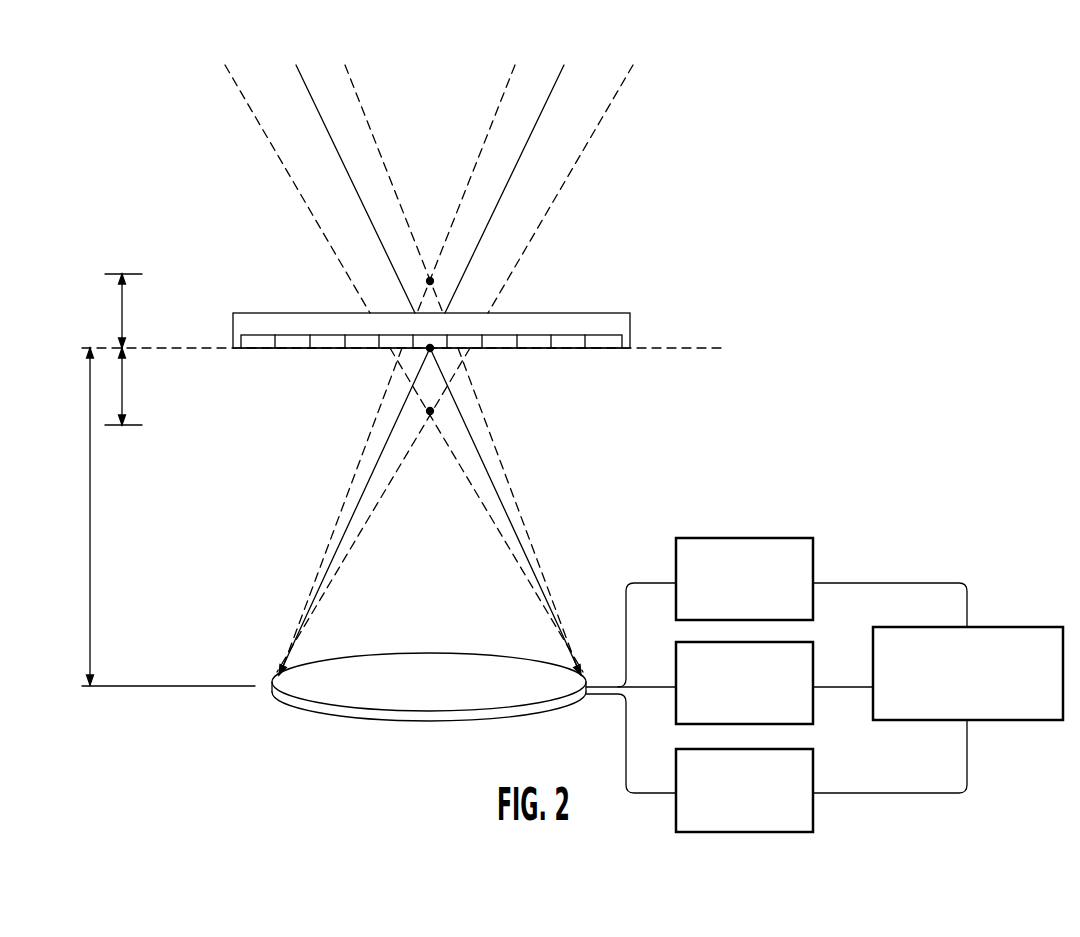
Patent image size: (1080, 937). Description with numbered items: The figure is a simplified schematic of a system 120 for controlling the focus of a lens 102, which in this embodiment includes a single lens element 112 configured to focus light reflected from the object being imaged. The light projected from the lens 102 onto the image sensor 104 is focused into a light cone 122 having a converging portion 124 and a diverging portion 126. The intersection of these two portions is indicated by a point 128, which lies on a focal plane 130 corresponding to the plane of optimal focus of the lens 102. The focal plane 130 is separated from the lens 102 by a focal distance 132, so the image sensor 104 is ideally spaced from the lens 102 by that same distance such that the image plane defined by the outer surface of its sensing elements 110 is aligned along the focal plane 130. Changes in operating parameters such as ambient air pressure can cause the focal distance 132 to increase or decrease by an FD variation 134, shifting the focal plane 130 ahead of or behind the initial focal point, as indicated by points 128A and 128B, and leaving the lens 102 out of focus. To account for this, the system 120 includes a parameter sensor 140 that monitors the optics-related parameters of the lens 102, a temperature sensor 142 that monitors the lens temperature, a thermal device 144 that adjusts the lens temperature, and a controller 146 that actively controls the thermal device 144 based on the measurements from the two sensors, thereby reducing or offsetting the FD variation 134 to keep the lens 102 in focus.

The lens 102 is at (294, 712).
The image sensor 104 is at (600, 310).
The sensing elements 110 is at (338, 348).
The lens element 112 is at (352, 708).
The system for controlling the focus of a lens 120 is at (922, 493).
The light cone 122 is at (383, 441).
The converging portion 124 is at (348, 507).
The diverging portion 126 is at (340, 158).
The point 128 is at (432, 350).
The point 128A is at (432, 412).
The point 128B is at (430, 279).
The focal plane 130 is at (648, 355).
The focal distance 132 is at (90, 500).
The FD variation 134 is at (123, 304).
The parameter sensor 140 is at (747, 832).
The temperature sensor 142 is at (770, 538).
The thermal device 144 is at (802, 724).
The controller 146 is at (1008, 720).